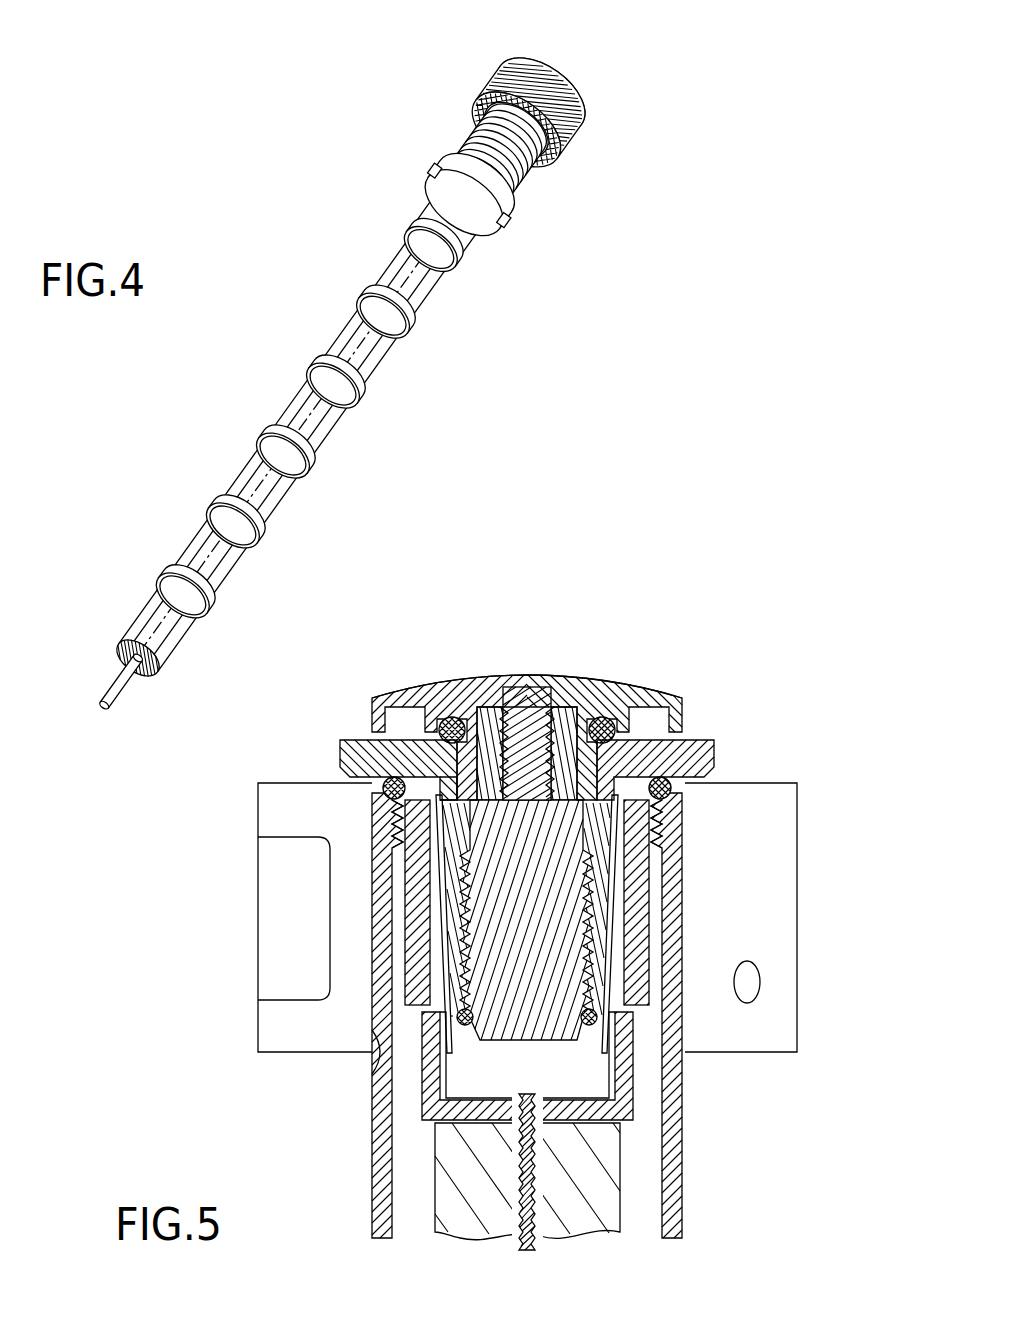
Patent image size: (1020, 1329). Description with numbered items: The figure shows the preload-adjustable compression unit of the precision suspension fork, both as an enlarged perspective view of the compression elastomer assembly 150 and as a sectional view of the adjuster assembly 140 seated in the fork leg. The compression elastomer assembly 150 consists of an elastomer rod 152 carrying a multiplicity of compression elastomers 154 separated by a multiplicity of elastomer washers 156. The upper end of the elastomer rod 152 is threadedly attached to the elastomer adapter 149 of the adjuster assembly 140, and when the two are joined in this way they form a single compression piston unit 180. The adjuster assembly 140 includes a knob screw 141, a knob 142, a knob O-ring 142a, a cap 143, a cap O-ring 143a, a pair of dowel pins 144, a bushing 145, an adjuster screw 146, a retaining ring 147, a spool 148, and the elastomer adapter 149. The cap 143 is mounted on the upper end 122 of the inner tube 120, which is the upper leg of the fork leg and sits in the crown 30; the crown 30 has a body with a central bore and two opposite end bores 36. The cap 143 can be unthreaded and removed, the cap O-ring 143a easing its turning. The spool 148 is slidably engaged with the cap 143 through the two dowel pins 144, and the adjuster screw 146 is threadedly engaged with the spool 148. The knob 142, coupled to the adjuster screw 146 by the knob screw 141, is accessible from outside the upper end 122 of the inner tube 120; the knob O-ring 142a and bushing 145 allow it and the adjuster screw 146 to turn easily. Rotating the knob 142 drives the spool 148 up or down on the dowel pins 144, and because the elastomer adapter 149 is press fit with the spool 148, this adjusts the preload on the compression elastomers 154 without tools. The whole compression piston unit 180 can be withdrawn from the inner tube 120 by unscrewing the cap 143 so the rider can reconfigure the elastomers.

In FIG. 5, the crown 30 is at (270, 1062).
In FIG. 5, the end bores 36 is at (372, 1074).
In FIG. 5, the inner tube 120 is at (362, 1185).
In FIG. 5, the upper end 122 is at (392, 852).
In FIG. 4, the adjuster assembly 140 is at (668, 250).
In FIG. 5, the adjuster assembly 140 is at (756, 680).
In FIG. 5, the knob screw 141 is at (511, 680).
In FIG. 4, the knob 142 is at (537, 78).
In FIG. 5, the knob 142 is at (600, 690).
In FIG. 5, the knob O-ring 142a is at (450, 720).
In FIG. 4, the cap 143 is at (480, 92).
In FIG. 5, the cap 143 is at (673, 760).
In FIG. 5, the cap O-ring 143a is at (383, 790).
In FIG. 4, the dowel pins 144 is at (467, 140).
In FIG. 5, the dowel pins 144 is at (425, 908).
In FIG. 5, the bushing 145 is at (455, 790).
In FIG. 4, the adjuster screw 146 is at (492, 150).
In FIG. 5, the adjuster screw 146 is at (548, 928).
In FIG. 5, the retaining ring 147 is at (462, 1026).
In FIG. 4, the spool 148 is at (510, 223).
In FIG. 5, the spool 148 is at (612, 1003).
In FIG. 4, the elastomer adapter 149 is at (440, 217).
In FIG. 5, the elastomer adapter 149 is at (622, 1105).
In FIG. 4, the compression elastomer assembly 150 is at (121, 470).
In FIG. 4, the elastomer rod 152 is at (100, 692).
In FIG. 5, the elastomer rod 152 is at (540, 1252).
In FIG. 4, the compression elastomers 154 is at (187, 642).
In FIG. 5, the compression elastomers 154 is at (470, 1235).
In FIG. 4, the elastomer washers 156 is at (380, 296).
In FIG. 4, the compression piston unit 180 is at (578, 433).